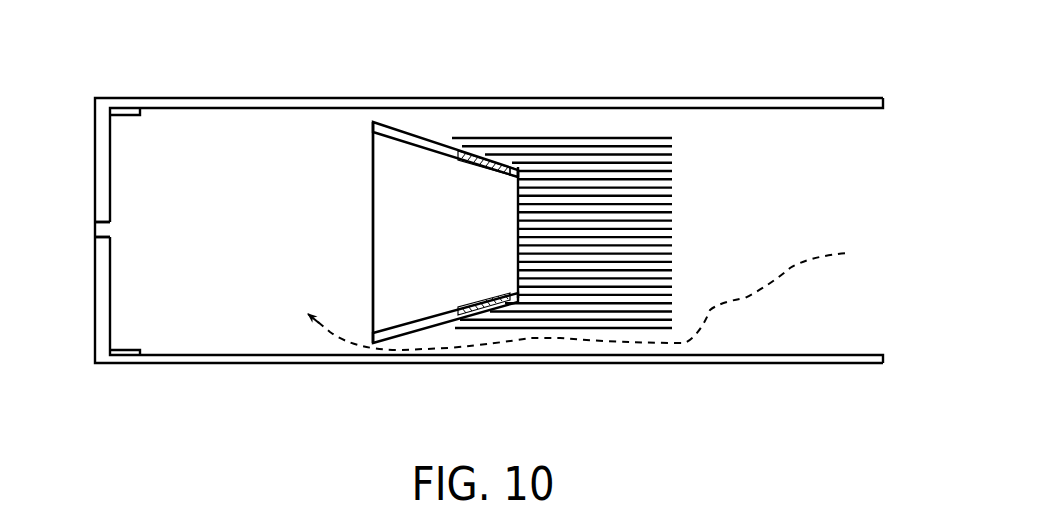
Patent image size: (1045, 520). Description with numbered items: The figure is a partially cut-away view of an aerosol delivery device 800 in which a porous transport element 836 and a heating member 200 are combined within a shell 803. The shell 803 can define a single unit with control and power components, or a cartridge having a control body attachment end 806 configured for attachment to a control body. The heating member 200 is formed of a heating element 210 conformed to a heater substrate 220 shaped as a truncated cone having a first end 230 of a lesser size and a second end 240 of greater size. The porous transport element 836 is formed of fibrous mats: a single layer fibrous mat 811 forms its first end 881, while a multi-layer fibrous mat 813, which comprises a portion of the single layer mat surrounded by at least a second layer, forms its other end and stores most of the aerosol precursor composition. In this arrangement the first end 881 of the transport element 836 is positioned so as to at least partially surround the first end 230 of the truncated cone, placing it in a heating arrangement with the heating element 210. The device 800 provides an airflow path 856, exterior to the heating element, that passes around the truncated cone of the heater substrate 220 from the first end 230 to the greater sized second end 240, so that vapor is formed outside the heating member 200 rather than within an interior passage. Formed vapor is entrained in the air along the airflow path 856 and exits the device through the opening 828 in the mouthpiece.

The aerosol delivery device 800 is at (141, 45).
The shell 803 is at (205, 97).
The control body attachment end 806 is at (913, 126).
The opening 828 is at (100, 228).
The heating member 200 is at (438, 218).
The second end 240 is at (360, 123).
The first end 881 is at (445, 137).
The heating element 210 is at (482, 312).
The single layer fibrous mat 811 is at (494, 154).
The first end 230 is at (517, 160).
The heater substrate 220 is at (418, 334).
The multi-layer fibrous mat 813 is at (593, 148).
The porous transport element 836 is at (549, 124).
The airflow path 856 is at (578, 288).